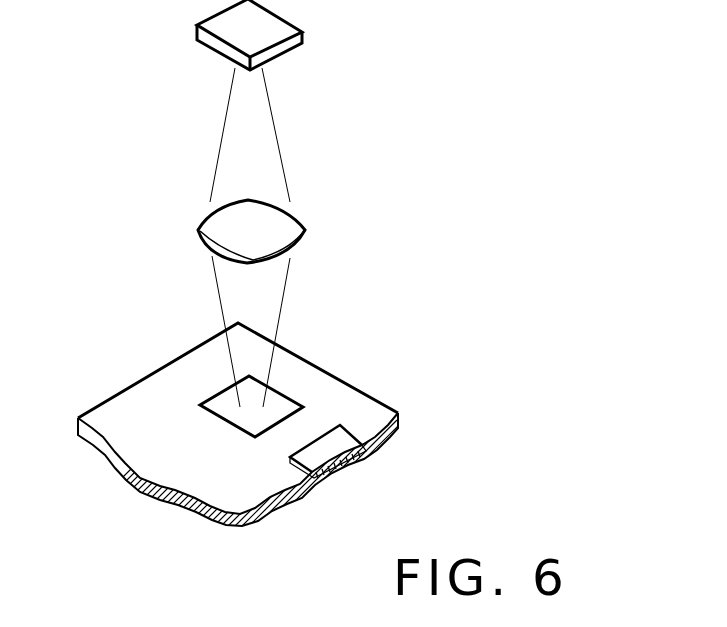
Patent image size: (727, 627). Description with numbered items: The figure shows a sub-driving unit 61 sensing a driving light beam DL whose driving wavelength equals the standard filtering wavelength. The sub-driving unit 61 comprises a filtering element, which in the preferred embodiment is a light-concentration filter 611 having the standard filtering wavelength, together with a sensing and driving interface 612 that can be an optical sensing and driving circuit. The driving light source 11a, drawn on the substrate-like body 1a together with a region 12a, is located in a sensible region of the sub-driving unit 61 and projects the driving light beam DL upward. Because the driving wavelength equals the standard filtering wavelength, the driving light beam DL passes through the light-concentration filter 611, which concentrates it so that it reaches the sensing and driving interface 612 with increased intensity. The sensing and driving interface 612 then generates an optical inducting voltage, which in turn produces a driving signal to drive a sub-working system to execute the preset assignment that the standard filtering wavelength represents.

The sub-driving unit 61 is at (120, 32).
The sensing and driving interface 612 is at (197, 33).
The light-concentration filter 611 is at (198, 232).
The driving light beam DL is at (273, 295).
The driving light source 1a is at (412, 340).
The driving light source 11a is at (217, 400).
The recess 12a is at (343, 440).